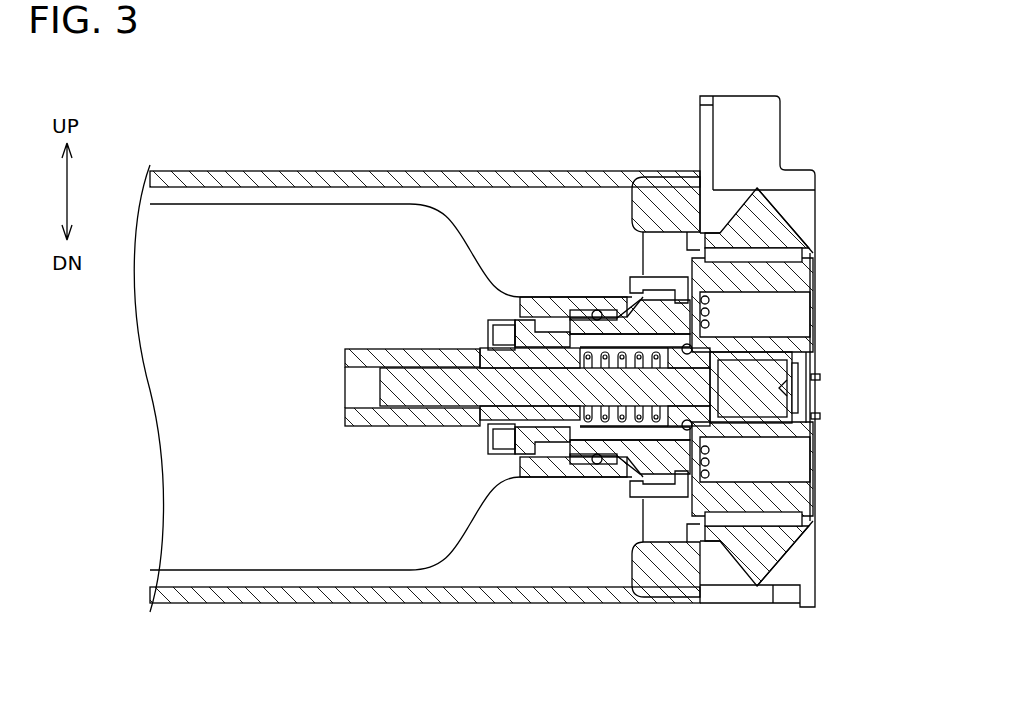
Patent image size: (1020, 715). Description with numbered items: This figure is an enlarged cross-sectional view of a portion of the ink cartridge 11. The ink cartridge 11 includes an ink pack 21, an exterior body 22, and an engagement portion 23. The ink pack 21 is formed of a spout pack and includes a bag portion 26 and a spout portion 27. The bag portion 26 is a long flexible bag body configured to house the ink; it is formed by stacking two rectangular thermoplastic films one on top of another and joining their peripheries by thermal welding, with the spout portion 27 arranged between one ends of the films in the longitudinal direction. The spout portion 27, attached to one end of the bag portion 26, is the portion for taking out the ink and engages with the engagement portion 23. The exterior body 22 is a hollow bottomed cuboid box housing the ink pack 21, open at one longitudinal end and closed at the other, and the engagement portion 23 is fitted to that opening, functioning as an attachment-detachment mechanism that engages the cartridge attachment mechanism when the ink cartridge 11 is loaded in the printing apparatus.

The ink cartridge 11 is at (814, 127).
The ink pack 21 is at (586, 278).
The exterior body 22 is at (262, 603).
The engagement portion 23 is at (815, 546).
The bag portion 26 is at (262, 204).
The spout portion 27 is at (548, 478).